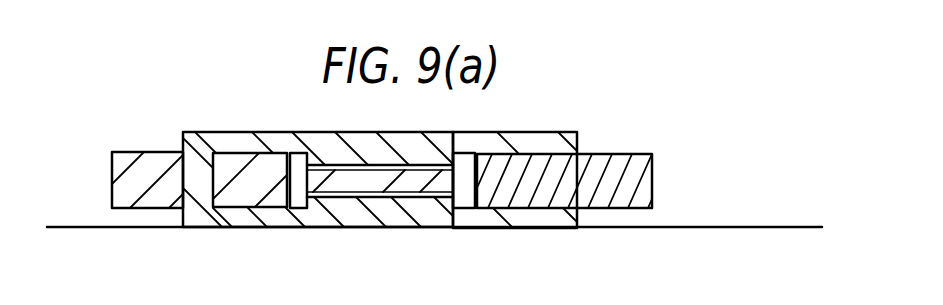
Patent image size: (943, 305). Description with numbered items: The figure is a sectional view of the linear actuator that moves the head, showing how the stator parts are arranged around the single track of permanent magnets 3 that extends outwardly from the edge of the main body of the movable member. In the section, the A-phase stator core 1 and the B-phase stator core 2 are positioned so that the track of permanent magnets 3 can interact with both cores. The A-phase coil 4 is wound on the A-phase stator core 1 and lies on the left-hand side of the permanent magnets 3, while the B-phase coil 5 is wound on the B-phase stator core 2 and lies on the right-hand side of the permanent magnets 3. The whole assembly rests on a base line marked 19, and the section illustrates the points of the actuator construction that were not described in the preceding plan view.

The A-phase stator core 1 is at (193, 213).
The B-phase stator core 2 is at (515, 217).
The permanent magnets 3 is at (343, 180).
The A-phase coil 4 is at (204, 133).
The B-phase coil 5 is at (643, 163).
The base plate 19 is at (785, 277).